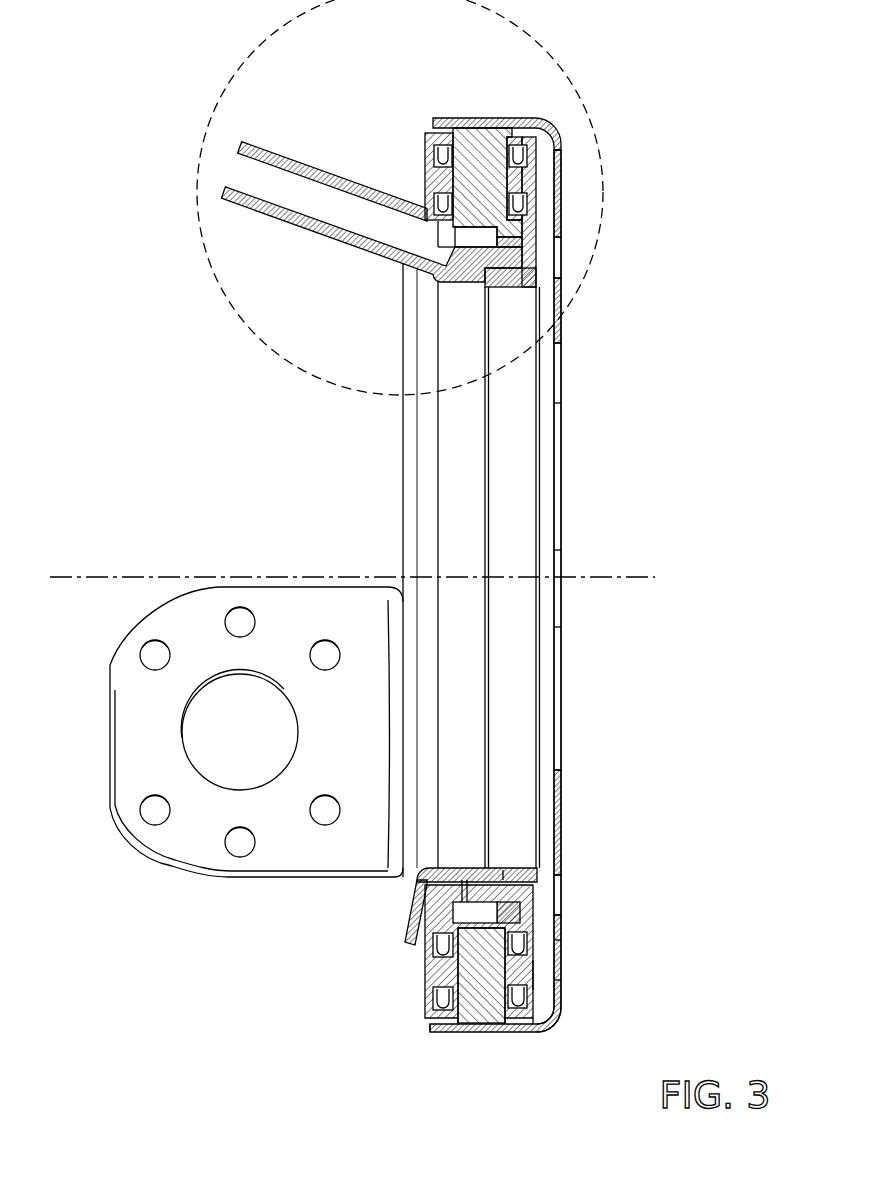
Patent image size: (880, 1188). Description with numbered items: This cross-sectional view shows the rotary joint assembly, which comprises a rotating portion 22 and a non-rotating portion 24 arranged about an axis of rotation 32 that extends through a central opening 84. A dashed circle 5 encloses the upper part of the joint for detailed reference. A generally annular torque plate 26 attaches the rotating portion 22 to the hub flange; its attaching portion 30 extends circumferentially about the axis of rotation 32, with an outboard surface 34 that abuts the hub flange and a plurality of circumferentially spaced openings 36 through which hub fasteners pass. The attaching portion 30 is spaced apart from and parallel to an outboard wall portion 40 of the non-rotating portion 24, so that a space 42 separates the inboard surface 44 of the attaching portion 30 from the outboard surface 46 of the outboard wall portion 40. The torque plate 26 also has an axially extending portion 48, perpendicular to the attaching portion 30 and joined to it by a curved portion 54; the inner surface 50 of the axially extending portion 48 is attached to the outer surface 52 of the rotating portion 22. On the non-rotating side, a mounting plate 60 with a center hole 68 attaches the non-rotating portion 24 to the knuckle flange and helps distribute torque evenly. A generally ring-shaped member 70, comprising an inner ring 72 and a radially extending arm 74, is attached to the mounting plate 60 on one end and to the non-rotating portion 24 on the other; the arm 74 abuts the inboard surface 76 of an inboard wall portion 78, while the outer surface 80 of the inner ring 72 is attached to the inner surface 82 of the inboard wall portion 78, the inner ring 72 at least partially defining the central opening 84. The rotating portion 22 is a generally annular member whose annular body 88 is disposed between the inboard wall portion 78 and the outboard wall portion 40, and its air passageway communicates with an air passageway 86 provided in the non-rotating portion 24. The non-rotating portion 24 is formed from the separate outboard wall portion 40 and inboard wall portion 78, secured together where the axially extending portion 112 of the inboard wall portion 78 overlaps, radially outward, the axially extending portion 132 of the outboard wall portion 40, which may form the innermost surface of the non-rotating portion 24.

The detail view circle 5 is at (207, 130).
The rotating portion 22 is at (457, 1025).
The non-rotating portion 24 is at (535, 892).
The torque plate 26 is at (561, 670).
The attaching portion 30 is at (558, 958).
The axis of rotation 32 is at (147, 575).
The outboard surface 34 is at (550, 987).
The openings 36 is at (563, 263).
The outboard wall portion 40 is at (535, 915).
The space 42 is at (542, 975).
The inboard surface 44 is at (563, 1002).
The outboard surface 46 is at (543, 1024).
The axially extending portion 48 is at (500, 1032).
The inner surface 50 is at (480, 1028).
The outer surface 52 is at (438, 1032).
The curved portion 54 is at (548, 1008).
The mounting plate 60 is at (302, 855).
The center hole 68 is at (228, 742).
The ring-shaped member 70 is at (437, 503).
The inner ring 72 is at (457, 483).
The radially extending arm 74 is at (403, 895).
The inboard surface 76 is at (437, 950).
The inboard wall portion 78 is at (437, 1000).
The outer surface 80 is at (463, 880).
The inner surface 82 is at (467, 882).
The central opening 84 is at (505, 500).
The air passageway 86 is at (463, 923).
The annular body 88 is at (525, 950).
The axially extending portion 112 is at (530, 886).
The axially extending portion 132 is at (503, 873).